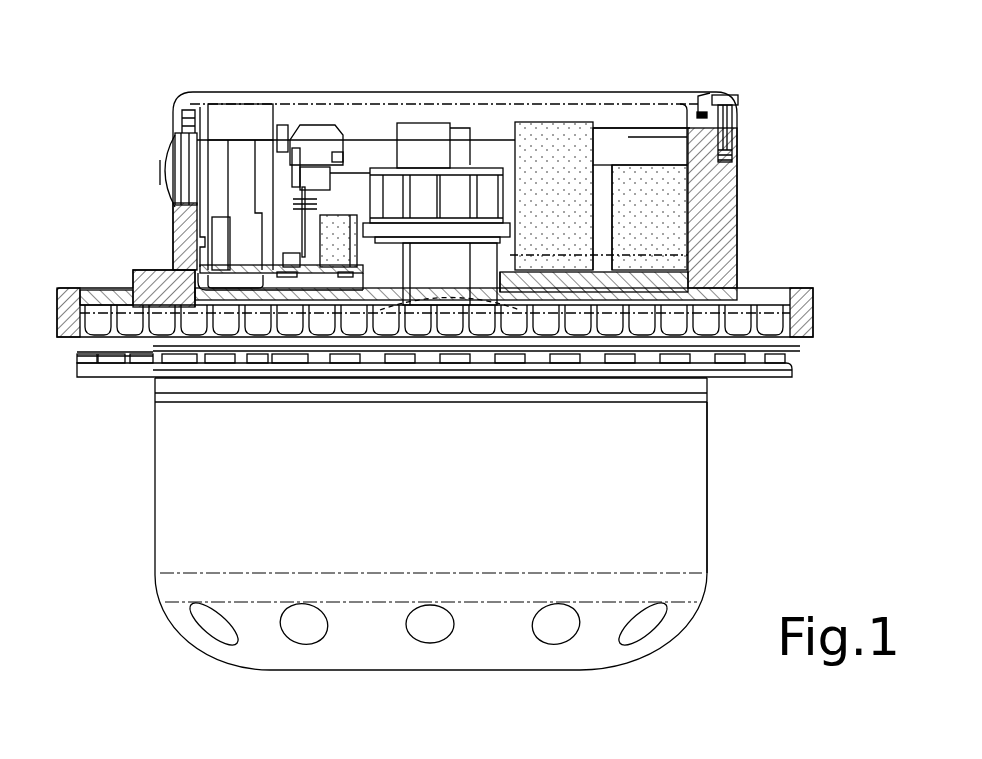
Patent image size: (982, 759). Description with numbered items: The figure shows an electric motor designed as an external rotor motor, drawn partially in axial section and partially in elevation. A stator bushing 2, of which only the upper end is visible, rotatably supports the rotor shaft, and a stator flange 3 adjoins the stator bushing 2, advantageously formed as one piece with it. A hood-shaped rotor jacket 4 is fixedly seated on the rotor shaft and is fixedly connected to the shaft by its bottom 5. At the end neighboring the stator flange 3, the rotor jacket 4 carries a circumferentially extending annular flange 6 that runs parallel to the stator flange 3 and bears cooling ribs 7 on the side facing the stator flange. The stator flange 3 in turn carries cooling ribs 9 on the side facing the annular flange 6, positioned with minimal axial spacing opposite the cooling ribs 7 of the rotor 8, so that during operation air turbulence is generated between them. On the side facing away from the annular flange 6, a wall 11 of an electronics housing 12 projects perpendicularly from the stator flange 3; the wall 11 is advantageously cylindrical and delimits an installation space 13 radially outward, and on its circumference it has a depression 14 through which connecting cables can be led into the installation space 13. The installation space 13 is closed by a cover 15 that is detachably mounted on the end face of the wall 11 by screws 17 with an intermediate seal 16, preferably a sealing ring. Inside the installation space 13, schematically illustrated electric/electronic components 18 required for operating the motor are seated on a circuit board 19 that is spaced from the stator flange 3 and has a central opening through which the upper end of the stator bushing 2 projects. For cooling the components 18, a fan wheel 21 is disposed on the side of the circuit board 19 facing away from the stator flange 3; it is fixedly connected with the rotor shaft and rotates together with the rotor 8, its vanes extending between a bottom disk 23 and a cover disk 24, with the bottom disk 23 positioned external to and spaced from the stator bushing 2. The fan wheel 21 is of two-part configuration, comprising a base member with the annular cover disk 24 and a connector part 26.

The stator bushing 2 is at (510, 270).
The stator flange 3 is at (610, 300).
The rotor jacket 4 is at (673, 490).
The bottom 5 is at (450, 672).
The annular flange 6 is at (755, 370).
The cooling ribs 7 is at (112, 364).
The rotor 8 is at (722, 538).
The cooling ribs 9 is at (700, 315).
The wall 11 is at (722, 185).
The electronics housing 12 is at (143, 190).
The installation space 13 is at (358, 165).
The depression 14 is at (186, 186).
The cover 15 is at (610, 100).
The seal 16 is at (715, 100).
The screws 17 is at (722, 140).
The electric/electronic components 18 is at (623, 202).
The circuit board 19 is at (237, 255).
The fan wheel 21 is at (473, 160).
The bottom disk 23 is at (403, 223).
The cover disk 24 is at (483, 175).
The connector part 26 is at (437, 270).